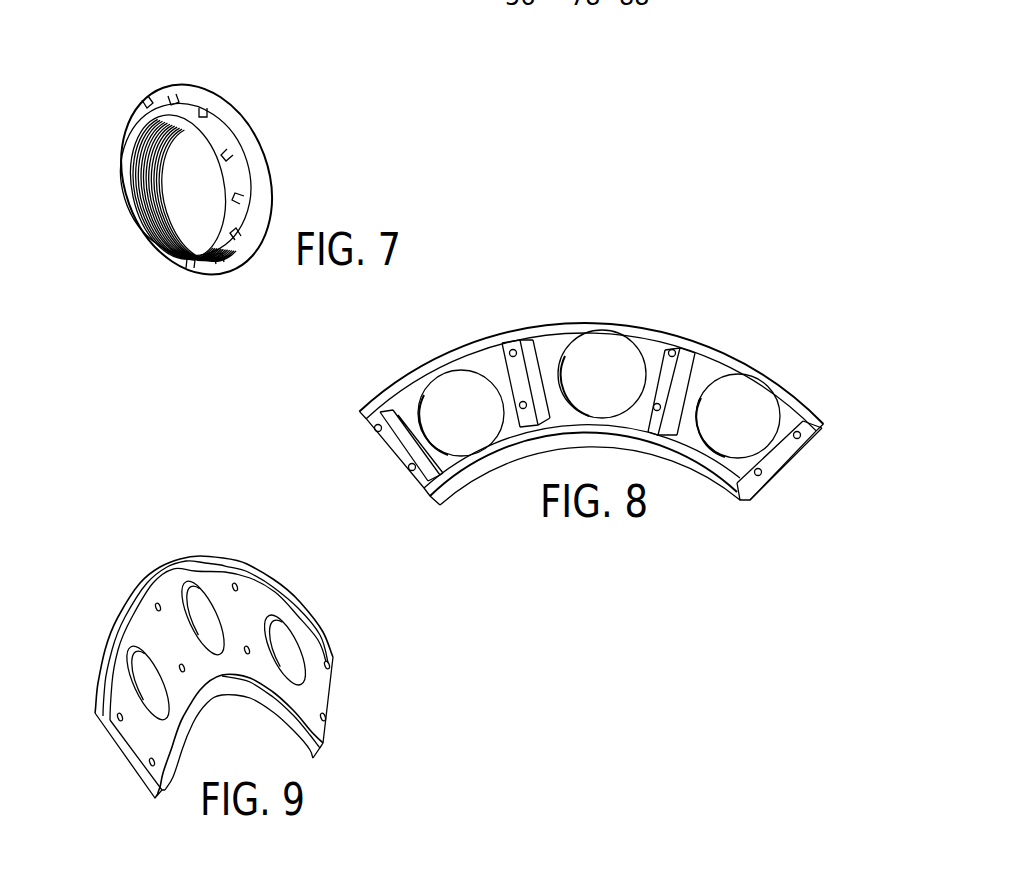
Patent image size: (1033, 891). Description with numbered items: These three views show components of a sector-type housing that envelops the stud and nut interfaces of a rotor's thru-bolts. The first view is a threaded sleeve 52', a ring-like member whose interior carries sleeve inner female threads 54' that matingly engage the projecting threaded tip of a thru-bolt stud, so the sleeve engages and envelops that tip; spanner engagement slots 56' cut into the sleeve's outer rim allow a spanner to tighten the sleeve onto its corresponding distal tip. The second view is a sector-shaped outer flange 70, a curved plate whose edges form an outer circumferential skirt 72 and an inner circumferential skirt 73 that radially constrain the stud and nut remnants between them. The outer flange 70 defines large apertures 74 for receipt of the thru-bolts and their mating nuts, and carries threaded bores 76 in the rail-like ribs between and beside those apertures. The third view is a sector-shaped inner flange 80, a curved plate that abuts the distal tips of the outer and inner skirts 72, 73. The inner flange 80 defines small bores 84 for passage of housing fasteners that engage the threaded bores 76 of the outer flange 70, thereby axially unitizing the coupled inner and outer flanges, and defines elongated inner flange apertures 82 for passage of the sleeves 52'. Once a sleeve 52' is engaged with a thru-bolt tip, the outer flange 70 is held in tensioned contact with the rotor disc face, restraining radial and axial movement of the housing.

In FIG. 7, the threaded sleeve 52' is at (258, 179).
In FIG. 7, the sleeve inner female threads 54' is at (145, 207).
In FIG. 7, the spanner engagement slots 56' is at (215, 158).
In FIG. 8, the outer flange 70 is at (740, 337).
In FIG. 8, the outer circumferential skirt 72 is at (545, 325).
In FIG. 8, the inner circumferential skirt 73 is at (692, 467).
In FIG. 8, the apertures 74 is at (574, 402).
In FIG. 8, the threaded bores 76 is at (671, 350).
In FIG. 9, the inner flange 80 is at (108, 580).
In FIG. 9, the inner flange apertures 82 is at (291, 618).
In FIG. 9, the bores 84 is at (334, 662).